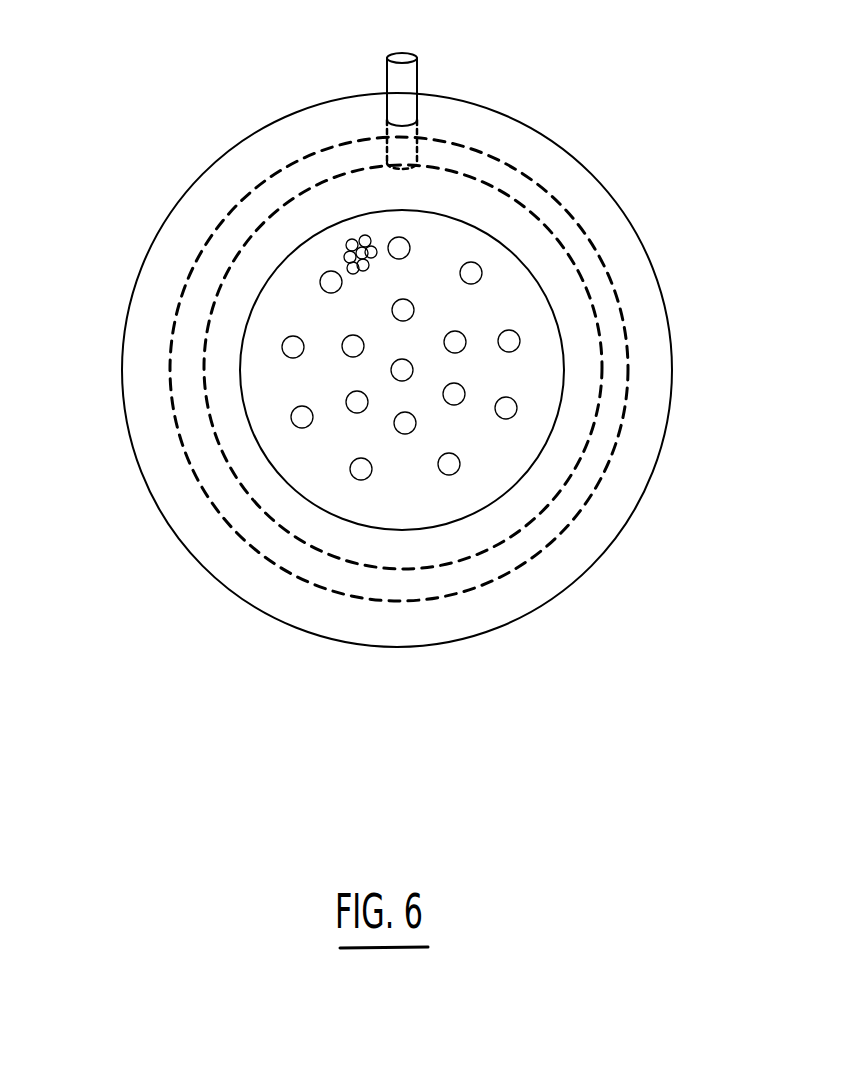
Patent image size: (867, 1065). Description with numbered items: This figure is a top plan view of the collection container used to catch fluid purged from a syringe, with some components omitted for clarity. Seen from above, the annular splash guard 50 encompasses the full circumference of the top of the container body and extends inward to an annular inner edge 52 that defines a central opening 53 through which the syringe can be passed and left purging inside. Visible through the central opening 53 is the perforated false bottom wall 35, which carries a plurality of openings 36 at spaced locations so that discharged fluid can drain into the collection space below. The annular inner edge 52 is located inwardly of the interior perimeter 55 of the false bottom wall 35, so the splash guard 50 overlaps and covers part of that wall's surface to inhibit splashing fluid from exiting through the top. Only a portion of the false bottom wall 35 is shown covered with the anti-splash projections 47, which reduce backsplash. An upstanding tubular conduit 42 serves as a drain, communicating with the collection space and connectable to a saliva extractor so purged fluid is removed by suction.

The perforated false bottom wall 35 is at (533, 362).
The openings 36 is at (510, 341).
The tubular conduit 42 is at (420, 78).
The anti-splash projections 47 is at (350, 243).
The annular splash guard 50 is at (147, 362).
The annular inner edge 52 is at (250, 415).
The central opening 53 is at (274, 309).
The interior perimeter 55 is at (522, 526).